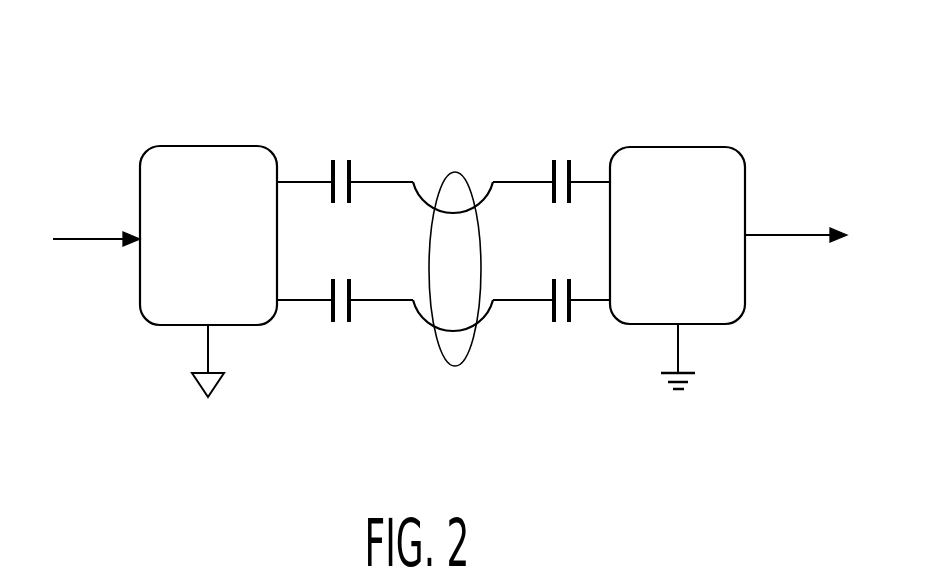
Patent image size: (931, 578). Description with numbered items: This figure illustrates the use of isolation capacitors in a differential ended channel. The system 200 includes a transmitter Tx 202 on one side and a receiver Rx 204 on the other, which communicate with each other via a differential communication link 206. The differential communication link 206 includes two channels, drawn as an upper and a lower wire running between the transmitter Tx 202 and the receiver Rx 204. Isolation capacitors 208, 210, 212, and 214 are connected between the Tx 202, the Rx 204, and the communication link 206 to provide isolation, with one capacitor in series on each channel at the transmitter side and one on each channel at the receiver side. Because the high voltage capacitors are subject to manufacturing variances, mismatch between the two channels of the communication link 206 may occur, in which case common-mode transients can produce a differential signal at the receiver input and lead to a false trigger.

The system 200 is at (138, 52).
The transmitter Tx 202 is at (208, 146).
The receiver Rx 204 is at (670, 147).
The differential communication link 206 is at (455, 172).
The isolation capacitor 208 is at (352, 173).
The isolation capacitor 210 is at (352, 310).
The isolation capacitor 212 is at (548, 173).
The isolation capacitor 214 is at (552, 308).